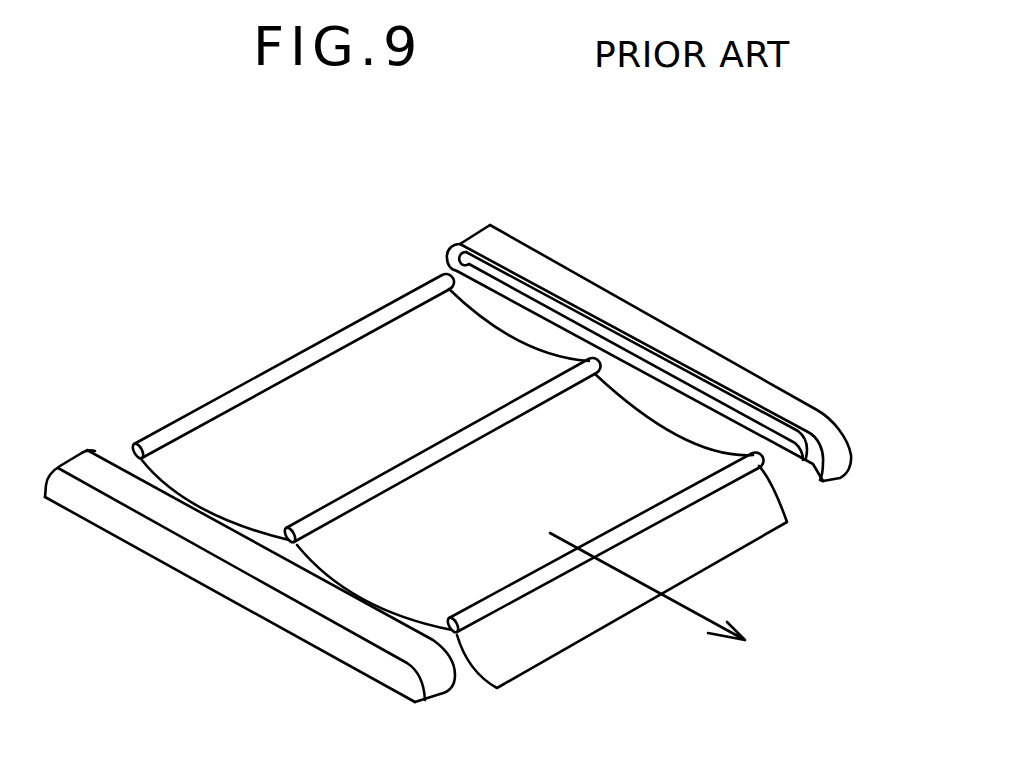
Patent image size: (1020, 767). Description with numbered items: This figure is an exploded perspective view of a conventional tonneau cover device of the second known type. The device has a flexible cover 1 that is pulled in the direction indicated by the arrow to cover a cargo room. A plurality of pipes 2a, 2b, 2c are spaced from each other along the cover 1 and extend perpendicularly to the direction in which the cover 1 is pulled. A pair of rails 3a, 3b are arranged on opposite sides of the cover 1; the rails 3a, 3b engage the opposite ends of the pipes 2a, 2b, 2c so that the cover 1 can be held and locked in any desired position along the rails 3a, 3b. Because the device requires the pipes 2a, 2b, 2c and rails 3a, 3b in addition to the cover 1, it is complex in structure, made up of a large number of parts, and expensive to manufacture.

The cover 1 is at (710, 540).
The pipe 2a is at (717, 478).
The pipe 2b is at (549, 392).
The pipe 2c is at (348, 330).
The rail 3a is at (307, 628).
The rail 3b is at (770, 400).